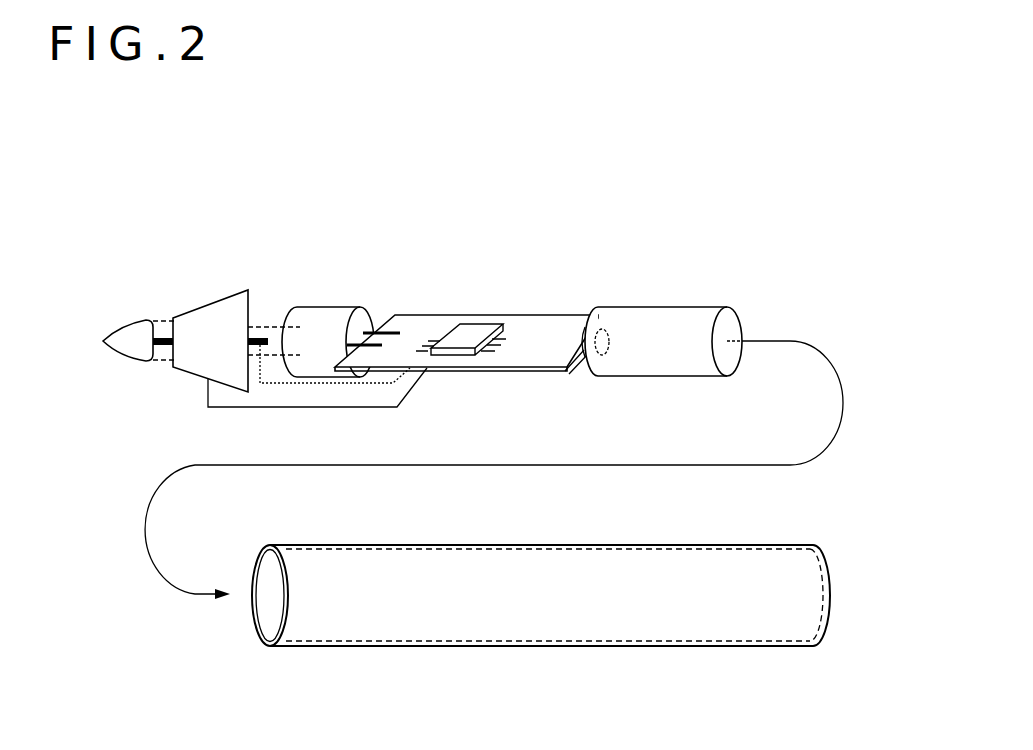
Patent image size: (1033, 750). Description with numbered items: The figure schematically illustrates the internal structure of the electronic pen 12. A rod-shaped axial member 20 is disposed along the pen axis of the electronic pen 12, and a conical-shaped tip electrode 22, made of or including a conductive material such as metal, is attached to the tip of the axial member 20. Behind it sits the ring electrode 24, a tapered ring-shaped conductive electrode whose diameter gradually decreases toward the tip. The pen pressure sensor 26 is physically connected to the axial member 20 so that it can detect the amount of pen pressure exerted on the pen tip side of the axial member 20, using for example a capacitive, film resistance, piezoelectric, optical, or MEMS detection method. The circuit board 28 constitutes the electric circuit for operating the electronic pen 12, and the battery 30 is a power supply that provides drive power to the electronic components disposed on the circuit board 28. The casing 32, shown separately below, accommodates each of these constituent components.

The electronic pen 12 is at (160, 211).
The axial member 20 is at (163, 362).
The tip electrode 22 is at (131, 335).
The ring electrode 24 is at (212, 320).
The pen pressure sensor 26 is at (325, 317).
The circuit board 28 is at (435, 318).
The battery 30 is at (643, 316).
The casing 32 is at (530, 620).